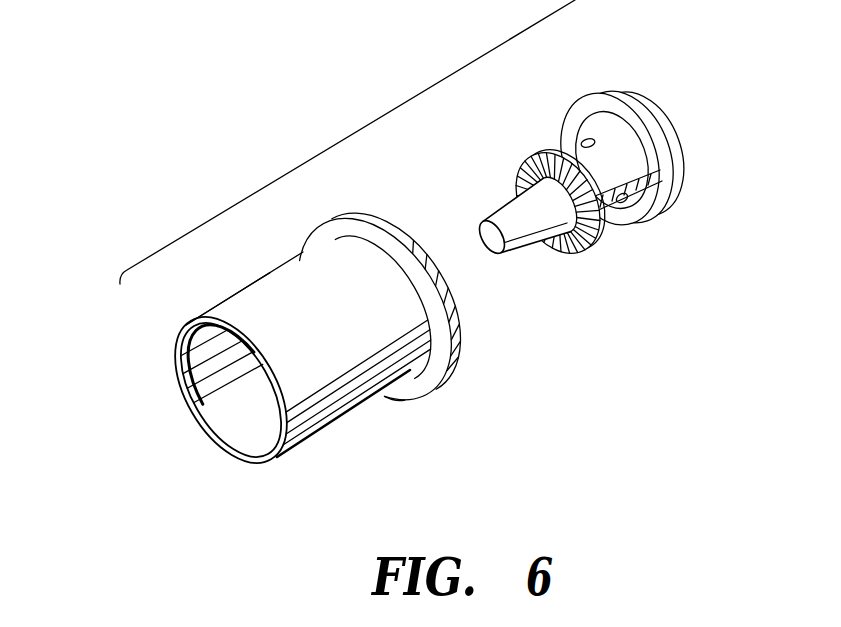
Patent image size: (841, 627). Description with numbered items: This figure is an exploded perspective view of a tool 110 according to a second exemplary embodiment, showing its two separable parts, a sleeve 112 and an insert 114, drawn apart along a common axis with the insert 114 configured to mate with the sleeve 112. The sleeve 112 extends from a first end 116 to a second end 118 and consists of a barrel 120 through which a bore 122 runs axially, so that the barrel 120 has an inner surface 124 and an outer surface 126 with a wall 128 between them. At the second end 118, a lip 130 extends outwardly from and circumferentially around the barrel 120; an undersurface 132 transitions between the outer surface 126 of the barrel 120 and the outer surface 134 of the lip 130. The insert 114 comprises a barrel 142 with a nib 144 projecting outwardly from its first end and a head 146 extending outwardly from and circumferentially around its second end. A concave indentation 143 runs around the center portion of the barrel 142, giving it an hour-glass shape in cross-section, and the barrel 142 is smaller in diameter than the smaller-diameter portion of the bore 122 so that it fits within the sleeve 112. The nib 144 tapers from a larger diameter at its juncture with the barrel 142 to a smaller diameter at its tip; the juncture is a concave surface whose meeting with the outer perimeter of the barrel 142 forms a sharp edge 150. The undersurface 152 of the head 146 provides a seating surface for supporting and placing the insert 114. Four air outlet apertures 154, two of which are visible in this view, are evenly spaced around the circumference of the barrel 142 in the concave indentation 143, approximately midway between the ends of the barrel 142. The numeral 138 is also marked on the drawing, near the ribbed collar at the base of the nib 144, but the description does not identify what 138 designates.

The tool 110 is at (377, 119).
The sleeve 112 is at (327, 418).
The insert 114 is at (639, 226).
The first end 116 is at (226, 452).
The second end 118 is at (450, 333).
The barrel 120 is at (243, 301).
The bore 122 is at (232, 402).
The inner surface 124 is at (268, 433).
The outer surface 126 is at (347, 393).
The wall 128 is at (182, 362).
The lip 130 is at (370, 220).
The undersurface 132 is at (420, 382).
The outer surface 134 is at (437, 297).
The ribbed collar 138 is at (575, 254).
The barrel 142 is at (619, 118).
The concave indentation 143 is at (646, 122).
The nib 144 is at (504, 214).
The head 146 is at (681, 133).
The sharp edge 150 is at (522, 153).
The undersurface 152 is at (660, 217).
The air outlet apertures 154 is at (587, 139).